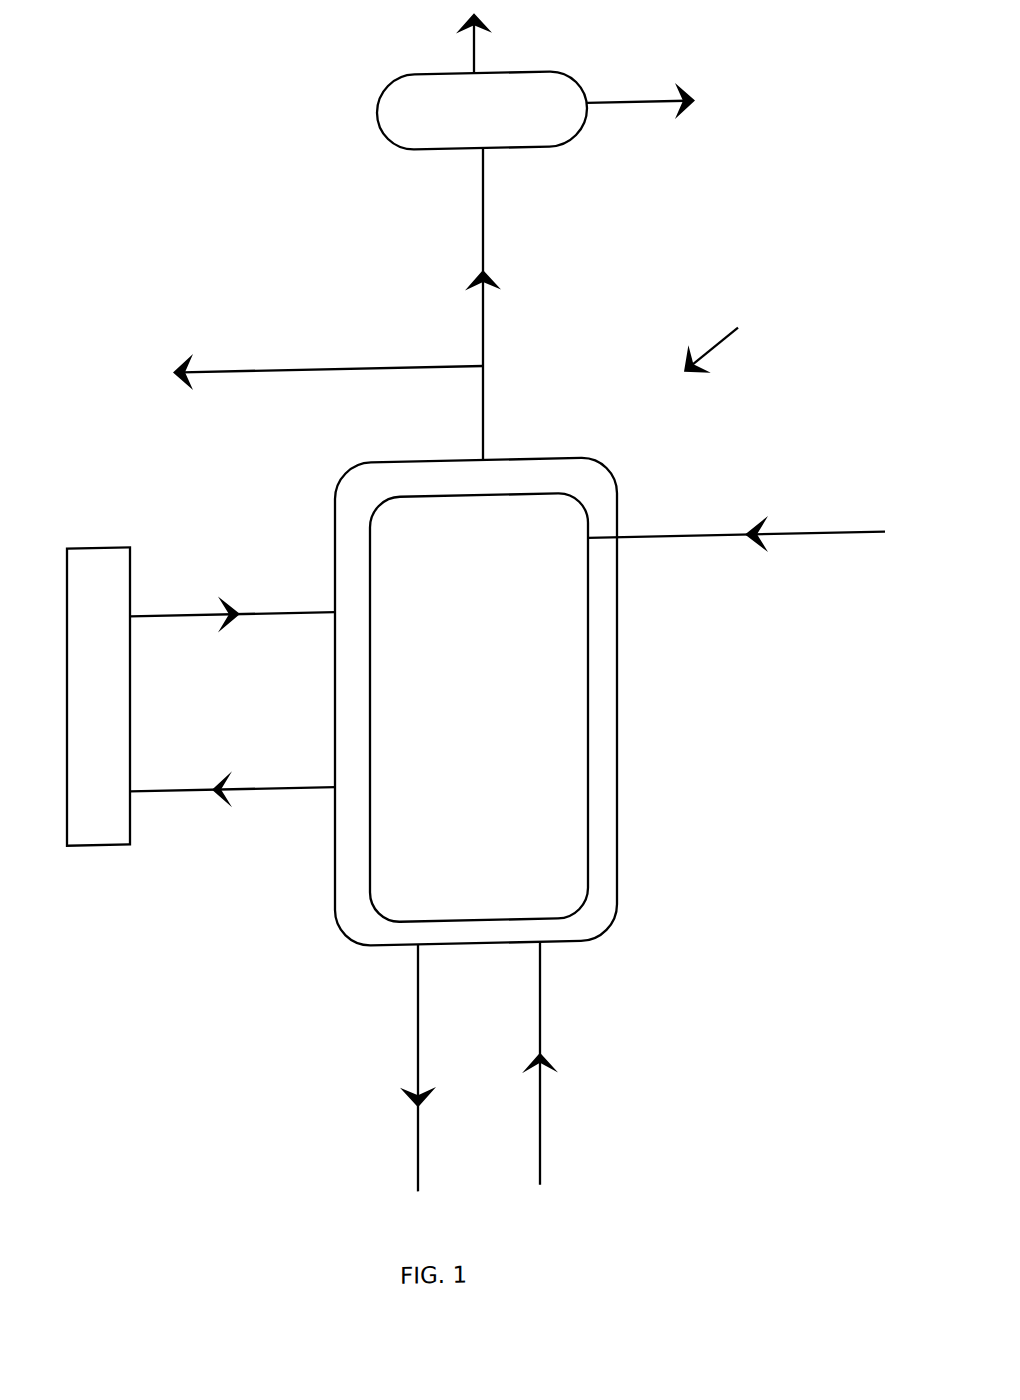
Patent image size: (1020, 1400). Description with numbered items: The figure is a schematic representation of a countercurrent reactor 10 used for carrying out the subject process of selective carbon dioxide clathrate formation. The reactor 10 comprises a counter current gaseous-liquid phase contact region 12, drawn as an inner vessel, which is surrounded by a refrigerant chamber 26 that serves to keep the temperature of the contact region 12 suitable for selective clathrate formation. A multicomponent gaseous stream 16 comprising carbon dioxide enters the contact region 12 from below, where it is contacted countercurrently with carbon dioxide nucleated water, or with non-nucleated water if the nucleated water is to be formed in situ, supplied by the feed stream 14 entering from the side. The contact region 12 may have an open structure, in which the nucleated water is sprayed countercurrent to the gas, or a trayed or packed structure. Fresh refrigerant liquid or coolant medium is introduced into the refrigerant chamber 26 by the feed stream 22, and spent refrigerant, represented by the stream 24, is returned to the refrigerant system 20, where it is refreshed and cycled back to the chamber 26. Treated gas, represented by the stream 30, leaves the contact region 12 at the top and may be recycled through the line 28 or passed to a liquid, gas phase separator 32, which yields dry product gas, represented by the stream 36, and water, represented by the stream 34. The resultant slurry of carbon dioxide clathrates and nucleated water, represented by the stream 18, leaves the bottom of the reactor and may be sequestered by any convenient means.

The reactor 10 is at (745, 327).
The counter current gaseous-liquid phase contact region 12 is at (479, 708).
The feed stream 14 is at (736, 526).
The multicomponent gaseous stream 16 is at (559, 1063).
The slurry stream 18 is at (393, 1068).
The refrigerant system 20 is at (98, 696).
The feed stream 22 is at (232, 594).
The spent refrigerant stream 24 is at (232, 810).
The refrigerant chamber 26 is at (476, 701).
The recycle line 28 is at (328, 355).
The treated gas stream 30 is at (504, 304).
The liquid, gas phase separator 32 is at (482, 110).
The water stream 34 is at (686, 101).
The dry product gas stream 36 is at (496, 43).